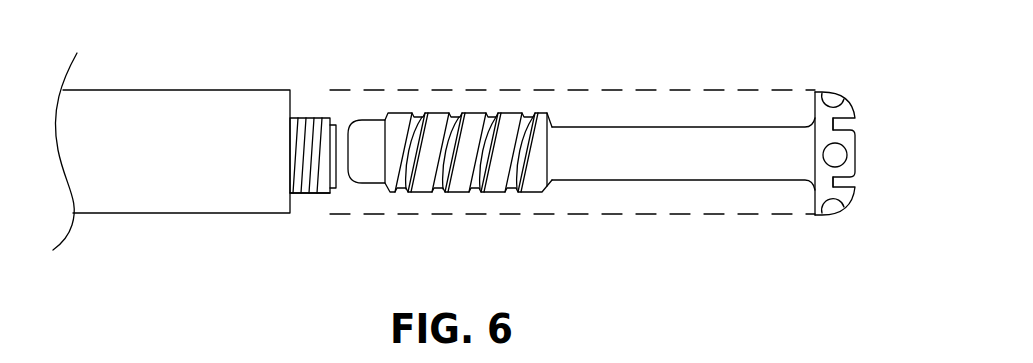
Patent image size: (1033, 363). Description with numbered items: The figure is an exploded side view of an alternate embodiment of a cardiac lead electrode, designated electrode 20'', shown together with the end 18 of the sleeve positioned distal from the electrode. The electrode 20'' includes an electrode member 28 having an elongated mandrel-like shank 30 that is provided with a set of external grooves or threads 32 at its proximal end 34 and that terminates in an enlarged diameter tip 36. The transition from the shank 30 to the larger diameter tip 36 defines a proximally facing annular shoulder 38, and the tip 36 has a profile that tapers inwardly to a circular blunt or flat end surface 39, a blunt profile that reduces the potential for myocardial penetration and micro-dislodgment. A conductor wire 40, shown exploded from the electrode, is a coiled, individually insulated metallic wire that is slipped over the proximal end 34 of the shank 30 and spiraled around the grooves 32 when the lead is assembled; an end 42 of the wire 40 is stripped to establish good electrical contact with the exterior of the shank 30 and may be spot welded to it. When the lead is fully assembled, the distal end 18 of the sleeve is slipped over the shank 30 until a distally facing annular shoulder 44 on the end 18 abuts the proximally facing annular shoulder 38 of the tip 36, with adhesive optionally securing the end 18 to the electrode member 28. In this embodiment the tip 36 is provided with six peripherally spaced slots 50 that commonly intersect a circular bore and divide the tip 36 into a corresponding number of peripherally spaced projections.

The end of the sleeve 18 is at (178, 88).
The electrode 20'' is at (572, 119).
The electrode member 28 is at (590, 125).
The shank 30 is at (593, 182).
The grooves or threads 32 is at (480, 187).
The proximal end 34 is at (365, 173).
The tip 36 is at (855, 155).
The proximally facing annular shoulder 38 is at (802, 195).
The end surface 39 is at (855, 112).
The conductor wire 40 is at (313, 112).
The end of the wire 42 is at (336, 127).
The distally facing annular shoulder 44 is at (292, 203).
The slots 50 is at (857, 130).